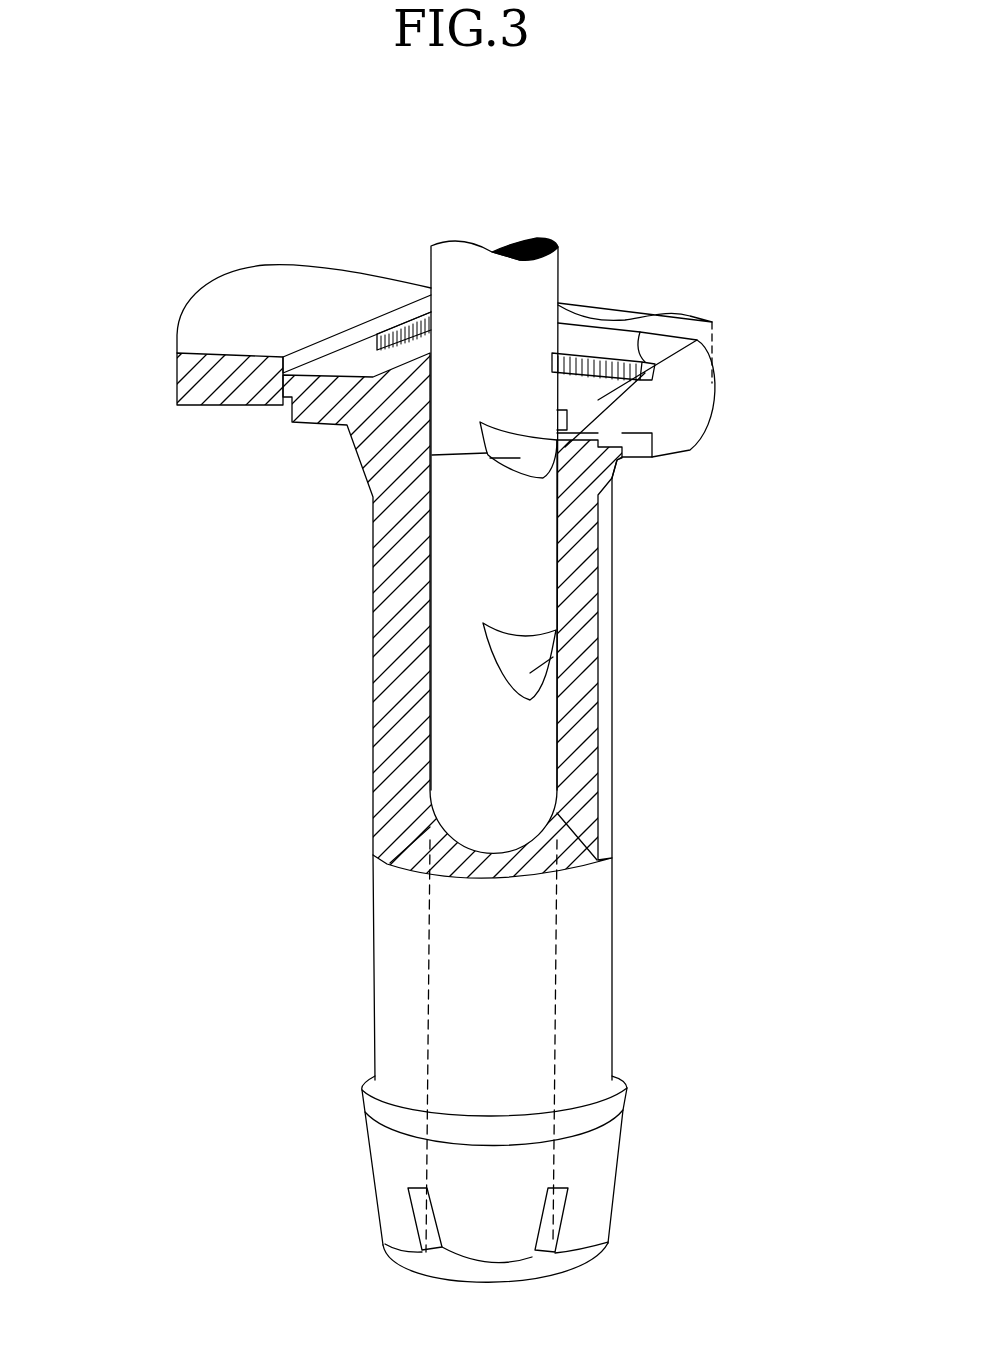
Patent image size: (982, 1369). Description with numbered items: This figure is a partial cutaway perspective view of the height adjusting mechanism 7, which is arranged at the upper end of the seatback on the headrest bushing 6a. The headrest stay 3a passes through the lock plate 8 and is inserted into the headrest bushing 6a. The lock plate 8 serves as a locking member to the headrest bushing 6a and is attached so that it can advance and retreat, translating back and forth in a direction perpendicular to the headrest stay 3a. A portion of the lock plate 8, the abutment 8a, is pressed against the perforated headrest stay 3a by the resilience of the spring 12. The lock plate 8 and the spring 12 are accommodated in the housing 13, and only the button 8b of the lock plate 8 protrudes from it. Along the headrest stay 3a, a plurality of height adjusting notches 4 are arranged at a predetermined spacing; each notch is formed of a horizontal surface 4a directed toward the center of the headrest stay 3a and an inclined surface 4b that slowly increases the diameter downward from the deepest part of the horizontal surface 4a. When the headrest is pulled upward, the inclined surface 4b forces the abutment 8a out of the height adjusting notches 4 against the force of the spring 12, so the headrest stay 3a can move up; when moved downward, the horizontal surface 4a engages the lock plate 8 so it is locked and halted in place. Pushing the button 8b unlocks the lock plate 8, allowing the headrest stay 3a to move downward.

The headrest stay 3a is at (523, 335).
The height adjusting notches 4 is at (195, 463).
The horizontal surface 4a is at (481, 433).
The inclined surface 4b is at (432, 455).
The headrest bushing 6a is at (415, 710).
The height adjusting mechanism 7 is at (673, 312).
The lock plate 8 is at (340, 332).
The abutment 8a is at (645, 413).
The button 8b is at (260, 330).
The spring 12 is at (710, 335).
The housing 13 is at (710, 383).